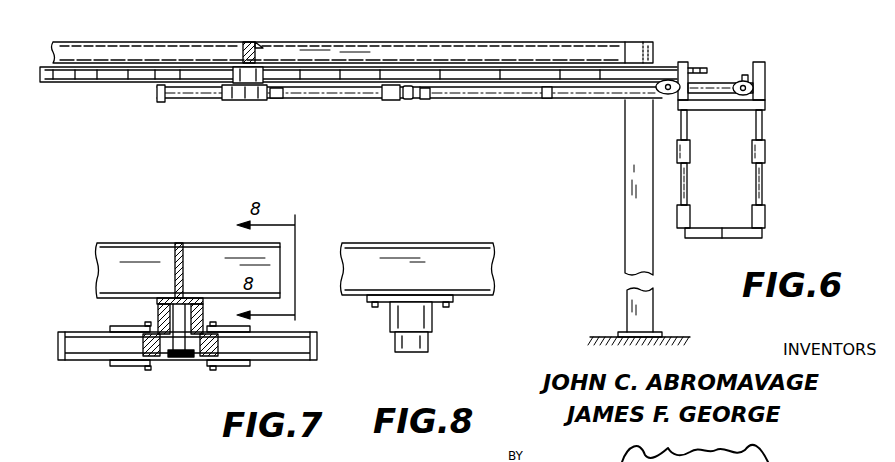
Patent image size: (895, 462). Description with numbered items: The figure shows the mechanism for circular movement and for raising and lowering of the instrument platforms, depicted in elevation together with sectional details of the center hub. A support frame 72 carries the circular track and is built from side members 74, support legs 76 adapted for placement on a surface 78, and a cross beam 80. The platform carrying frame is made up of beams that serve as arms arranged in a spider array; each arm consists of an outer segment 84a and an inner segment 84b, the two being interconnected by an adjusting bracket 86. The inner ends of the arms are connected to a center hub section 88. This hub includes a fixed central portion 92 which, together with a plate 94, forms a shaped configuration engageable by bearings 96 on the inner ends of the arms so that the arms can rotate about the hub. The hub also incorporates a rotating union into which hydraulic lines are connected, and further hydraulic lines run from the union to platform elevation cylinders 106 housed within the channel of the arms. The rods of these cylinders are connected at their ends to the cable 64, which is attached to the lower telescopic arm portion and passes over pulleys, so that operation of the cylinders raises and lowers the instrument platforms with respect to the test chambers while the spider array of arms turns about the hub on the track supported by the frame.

In FIG. 6, the cable 64 is at (623, 102).
In FIG. 7, the support frame 72 is at (213, 242).
In FIG. 6, the side members 74 is at (645, 42).
In FIG. 6, the support legs 76 is at (627, 177).
In FIG. 6, the surface 78 is at (665, 335).
In FIG. 6, the cross beam 80 is at (260, 45).
In FIG. 6, the outer segments 84a is at (572, 103).
In FIG. 6, the inner segments 84b is at (330, 103).
In FIG. 6, the adjusting brackets 86 is at (393, 103).
In FIG. 6, the center hub section 88 is at (279, 66).
In FIG. 7, the center hub section 88 is at (187, 346).
In FIG. 8, the center hub section 88 is at (435, 244).
In FIG. 7, the fixed central portion 92 is at (133, 363).
In FIG. 8, the fixed central portion 92 is at (433, 322).
In FIG. 7, the plate 94 is at (178, 358).
In FIG. 7, the bearings 96 is at (203, 366).
In FIG. 6, the platform elevation cylinders 106 is at (426, 104).